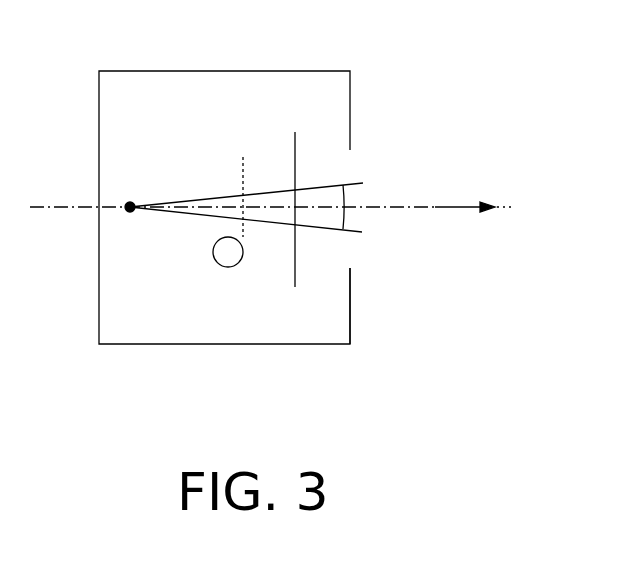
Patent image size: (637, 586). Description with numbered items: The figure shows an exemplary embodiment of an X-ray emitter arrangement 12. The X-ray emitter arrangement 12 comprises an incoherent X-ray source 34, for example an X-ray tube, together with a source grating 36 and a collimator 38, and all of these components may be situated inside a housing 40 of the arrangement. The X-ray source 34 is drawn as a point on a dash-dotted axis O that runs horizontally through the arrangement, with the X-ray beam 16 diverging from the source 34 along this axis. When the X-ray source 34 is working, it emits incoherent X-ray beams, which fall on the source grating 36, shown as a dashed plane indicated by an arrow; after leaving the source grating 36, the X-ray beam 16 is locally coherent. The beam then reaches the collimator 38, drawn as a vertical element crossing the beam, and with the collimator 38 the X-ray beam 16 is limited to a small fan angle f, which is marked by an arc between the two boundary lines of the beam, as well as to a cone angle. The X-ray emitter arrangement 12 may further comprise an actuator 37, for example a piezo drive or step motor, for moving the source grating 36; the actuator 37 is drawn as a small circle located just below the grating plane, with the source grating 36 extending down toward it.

The X-ray emitter arrangement 12 is at (350, 100).
The optical axis O is at (55, 207).
The X-ray source 34 is at (125, 212).
The X-ray beam 16 is at (275, 214).
The source grating 36 is at (240, 143).
The actuator 37 is at (215, 258).
The collimator 38 is at (297, 168).
The fan angle f is at (344, 226).
The housing 40 is at (350, 307).